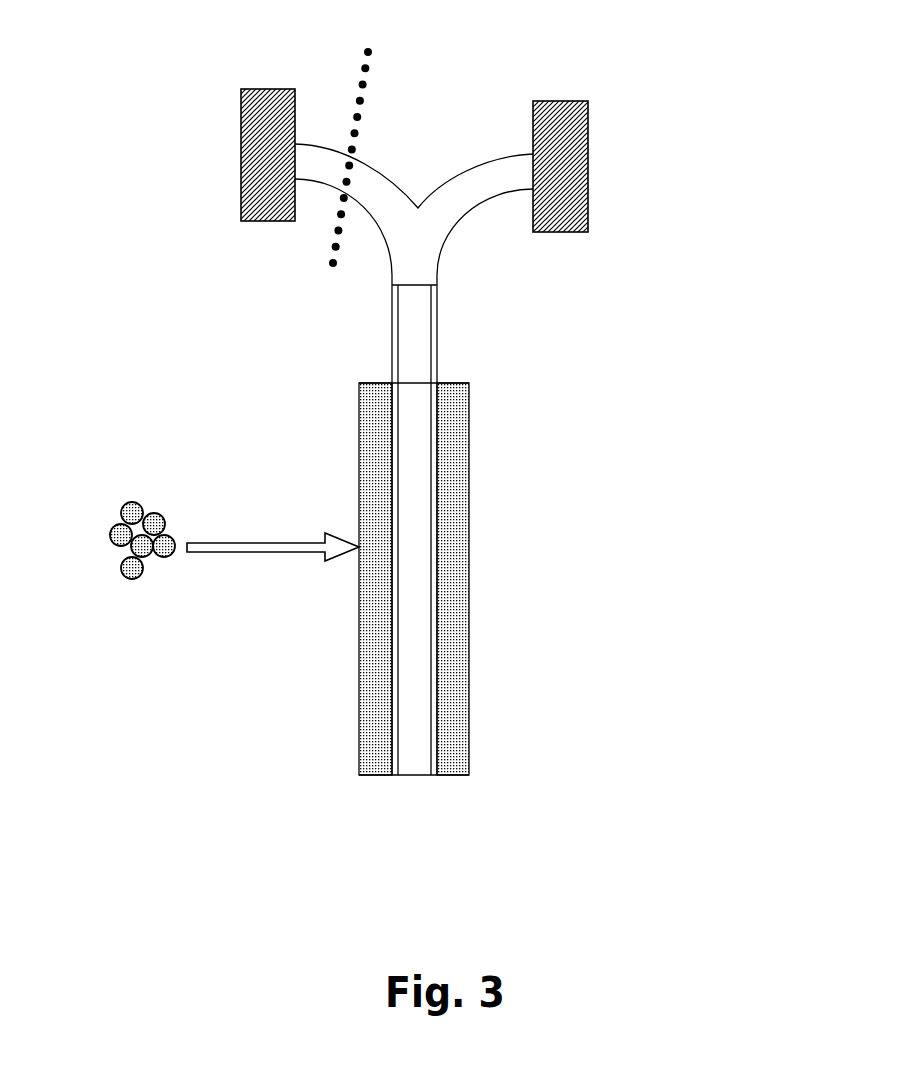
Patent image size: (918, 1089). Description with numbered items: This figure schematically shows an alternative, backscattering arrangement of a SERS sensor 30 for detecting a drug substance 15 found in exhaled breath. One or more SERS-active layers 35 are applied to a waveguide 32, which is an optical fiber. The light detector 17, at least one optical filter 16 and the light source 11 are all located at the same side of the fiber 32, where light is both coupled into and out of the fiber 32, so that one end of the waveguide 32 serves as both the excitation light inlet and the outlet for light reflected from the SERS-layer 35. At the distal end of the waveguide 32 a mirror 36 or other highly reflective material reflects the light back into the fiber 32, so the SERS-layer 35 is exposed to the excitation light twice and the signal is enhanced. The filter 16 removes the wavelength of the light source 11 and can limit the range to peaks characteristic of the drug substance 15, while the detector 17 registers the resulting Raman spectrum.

The light source 11 is at (601, 144).
The drug substance 15 is at (110, 524).
The optical filter 16 is at (359, 55).
The light detector 17 is at (224, 132).
The SERS sensor 30 is at (664, 261).
The waveguide 32 is at (438, 350).
The SERS-active layer 35 is at (471, 580).
The mirror 36 is at (427, 780).